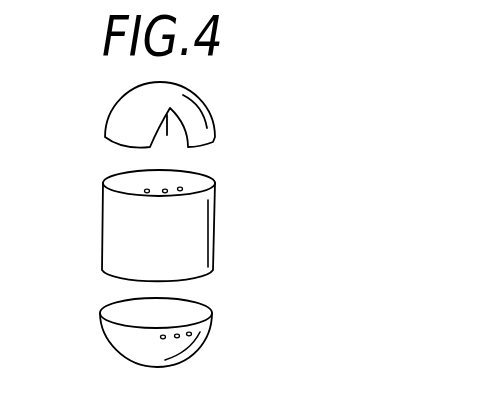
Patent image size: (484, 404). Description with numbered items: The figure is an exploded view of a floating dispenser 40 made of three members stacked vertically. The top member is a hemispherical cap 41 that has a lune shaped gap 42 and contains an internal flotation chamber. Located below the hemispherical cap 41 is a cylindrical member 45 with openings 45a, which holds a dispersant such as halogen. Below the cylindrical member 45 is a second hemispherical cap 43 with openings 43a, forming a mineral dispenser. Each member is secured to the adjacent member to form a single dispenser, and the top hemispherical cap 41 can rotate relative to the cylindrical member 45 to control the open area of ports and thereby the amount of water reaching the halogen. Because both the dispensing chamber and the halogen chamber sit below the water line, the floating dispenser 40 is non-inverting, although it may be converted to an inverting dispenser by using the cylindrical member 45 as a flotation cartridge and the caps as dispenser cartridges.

The floating dispenser 40 is at (253, 145).
The hemispherical cap 41 is at (168, 84).
The lune shaped gap 42 is at (167, 135).
The second hemispherical cap 43 is at (107, 350).
The openings 43a is at (192, 336).
The cylindrical member 45 is at (100, 237).
The openings 45a is at (166, 195).